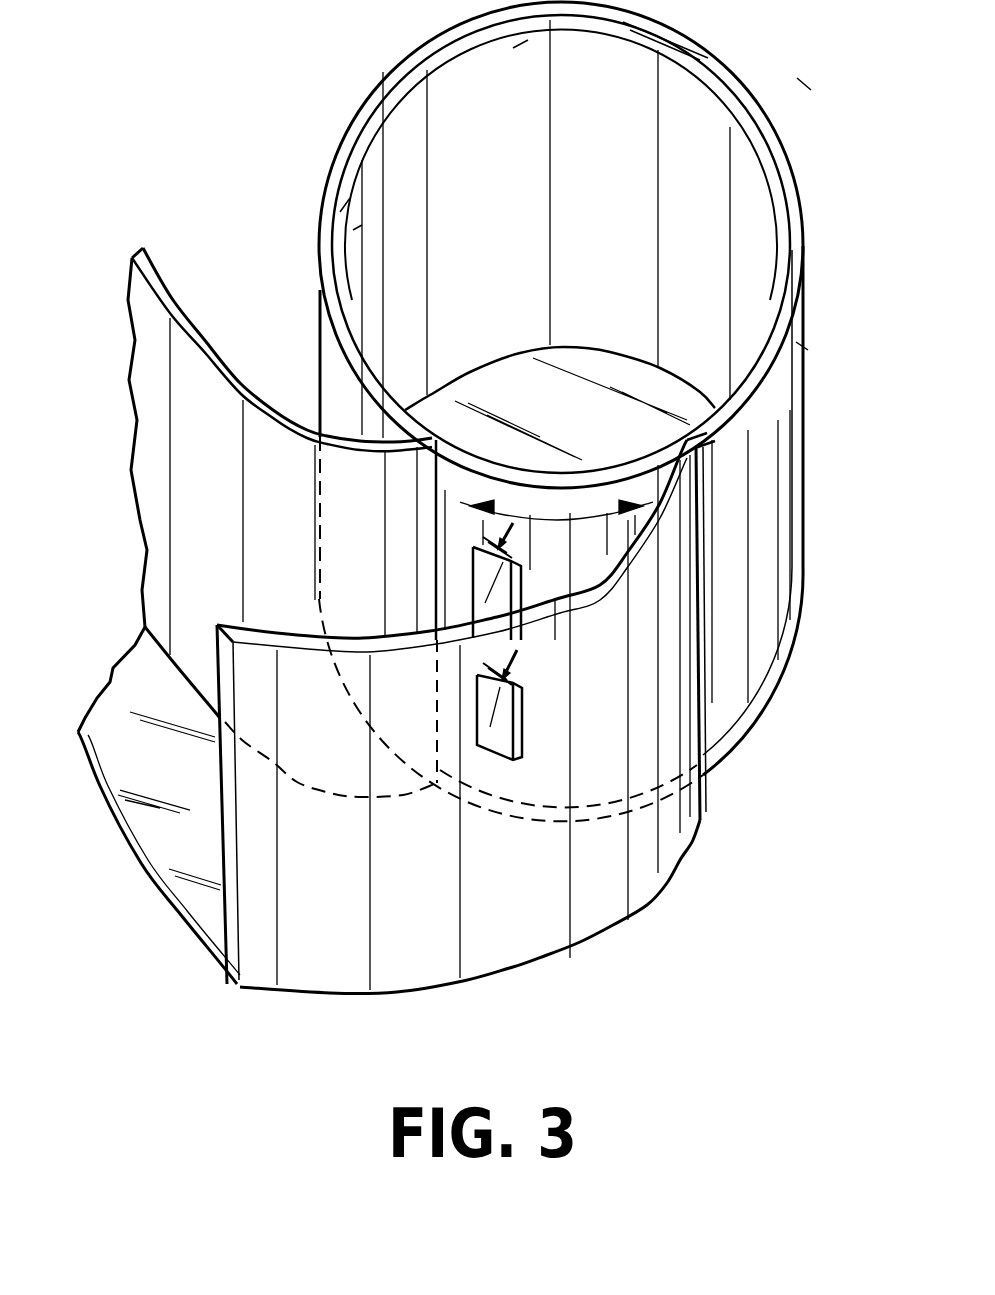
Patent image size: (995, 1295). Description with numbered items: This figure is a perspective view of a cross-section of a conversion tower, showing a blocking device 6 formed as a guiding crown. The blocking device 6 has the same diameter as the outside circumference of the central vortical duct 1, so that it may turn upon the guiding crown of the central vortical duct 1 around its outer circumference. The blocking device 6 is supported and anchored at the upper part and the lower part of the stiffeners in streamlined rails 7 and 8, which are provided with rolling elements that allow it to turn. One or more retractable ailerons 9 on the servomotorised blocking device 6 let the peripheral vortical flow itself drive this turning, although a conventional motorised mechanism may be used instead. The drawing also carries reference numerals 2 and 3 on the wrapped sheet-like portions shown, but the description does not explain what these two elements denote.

The central vortical duct 1 is at (417, 133).
The wrapped sheet 2 is at (613, 882).
The sheet 3 is at (214, 366).
The blocking device 6 is at (597, 548).
The streamlined rail 7 is at (710, 430).
The streamlined rail 8 is at (712, 768).
The retractable aileron 9 is at (485, 702).